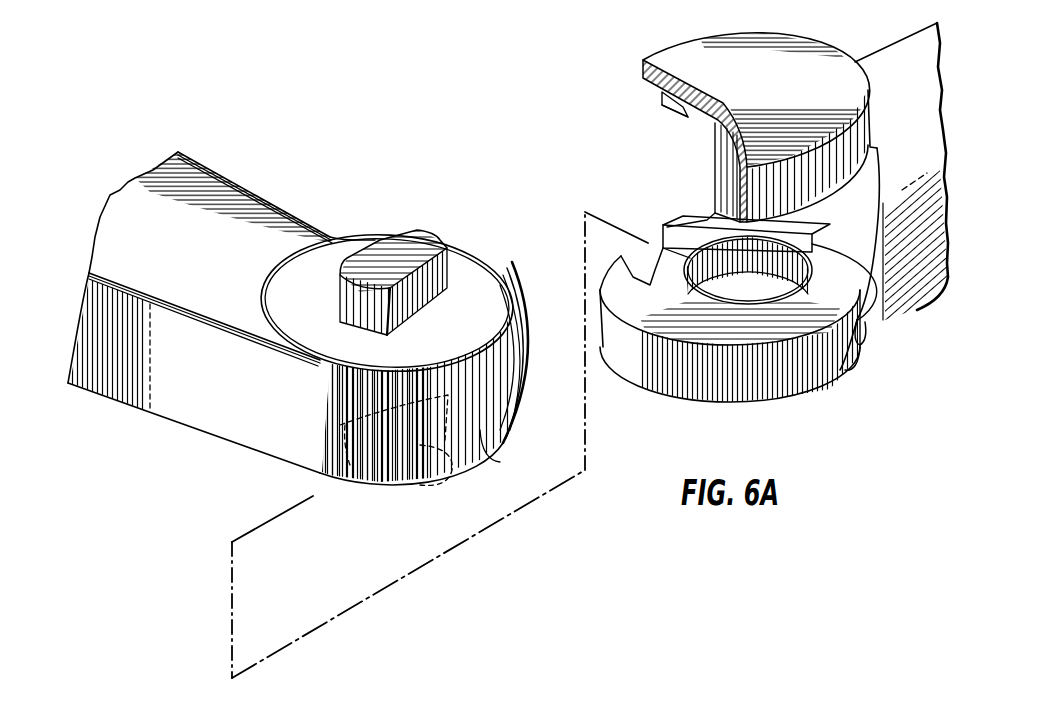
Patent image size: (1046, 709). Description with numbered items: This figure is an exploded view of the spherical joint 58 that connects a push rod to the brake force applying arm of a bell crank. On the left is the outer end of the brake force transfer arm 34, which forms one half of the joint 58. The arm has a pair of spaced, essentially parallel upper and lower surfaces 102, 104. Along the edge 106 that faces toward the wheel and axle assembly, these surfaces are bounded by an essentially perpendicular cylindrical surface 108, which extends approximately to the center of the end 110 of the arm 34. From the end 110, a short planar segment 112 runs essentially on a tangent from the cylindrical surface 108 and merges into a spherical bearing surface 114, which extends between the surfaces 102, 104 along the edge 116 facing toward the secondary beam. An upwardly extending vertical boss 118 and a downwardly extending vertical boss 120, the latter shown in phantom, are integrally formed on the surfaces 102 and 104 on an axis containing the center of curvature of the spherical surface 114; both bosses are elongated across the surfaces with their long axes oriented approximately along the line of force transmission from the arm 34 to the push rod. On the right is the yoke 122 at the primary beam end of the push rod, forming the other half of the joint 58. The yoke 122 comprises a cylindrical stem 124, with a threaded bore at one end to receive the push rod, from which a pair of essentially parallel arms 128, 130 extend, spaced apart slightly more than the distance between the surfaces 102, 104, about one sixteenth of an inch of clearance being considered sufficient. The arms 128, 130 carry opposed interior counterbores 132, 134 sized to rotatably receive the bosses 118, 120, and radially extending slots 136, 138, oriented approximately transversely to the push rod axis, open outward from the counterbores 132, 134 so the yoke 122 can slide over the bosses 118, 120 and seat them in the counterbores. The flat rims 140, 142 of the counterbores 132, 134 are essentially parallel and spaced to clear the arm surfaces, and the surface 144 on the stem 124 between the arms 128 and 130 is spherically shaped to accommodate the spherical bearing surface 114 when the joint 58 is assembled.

The brake force transfer arm 34 is at (210, 192).
The spherical joint 58 is at (585, 180).
The upper surface 102 is at (290, 336).
The lower surface 104 is at (227, 440).
The edge 106 is at (210, 320).
The cylindrical surface 108 is at (340, 422).
The end 110 is at (480, 450).
The planar segment 112 is at (494, 406).
The spherical bearing surface 114 is at (520, 320).
The edge 116 is at (473, 256).
The upwardly extending vertical boss 118 is at (390, 258).
The downwardly extending vertical boss 120 is at (413, 493).
The yoke 122 is at (878, 342).
The cylindrical stem 124 is at (923, 277).
The arm 128 is at (803, 62).
The arm 130 is at (790, 367).
The interior counterbore 132 is at (703, 140).
The interior counterbore 134 is at (705, 300).
The radially extending slot 136 is at (657, 103).
The radially extending slot 138 is at (645, 268).
The flat rim 140 is at (677, 110).
The flat rim 142 is at (713, 322).
The spherically shaped surface 144 is at (733, 183).